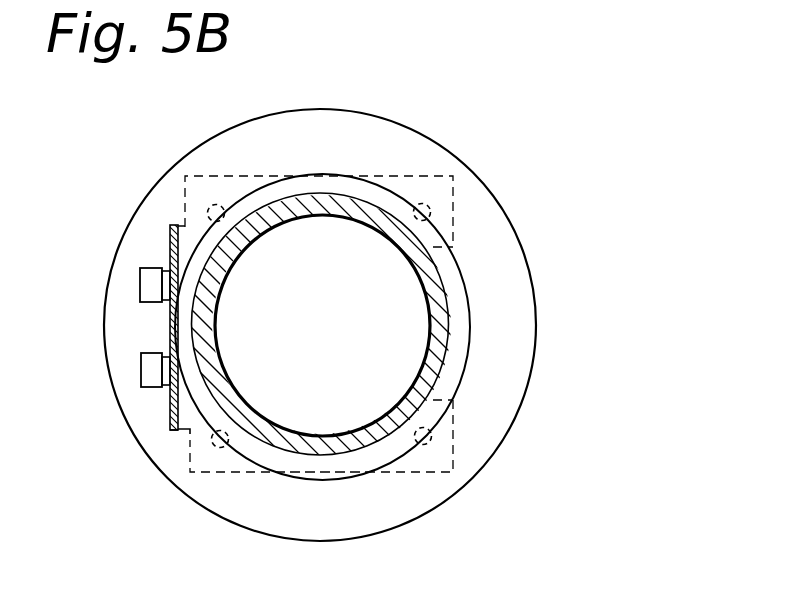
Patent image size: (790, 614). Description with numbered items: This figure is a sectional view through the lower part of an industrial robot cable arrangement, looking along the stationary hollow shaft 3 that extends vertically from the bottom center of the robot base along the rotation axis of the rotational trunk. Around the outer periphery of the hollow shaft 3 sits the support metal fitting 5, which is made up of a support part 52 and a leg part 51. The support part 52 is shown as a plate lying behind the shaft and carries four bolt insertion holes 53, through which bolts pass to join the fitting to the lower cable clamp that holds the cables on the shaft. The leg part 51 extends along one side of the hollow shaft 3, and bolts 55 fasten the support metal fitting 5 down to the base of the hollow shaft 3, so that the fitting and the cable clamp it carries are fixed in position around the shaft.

The hollow shaft 3 is at (212, 268).
The support metal fitting 5 is at (169, 242).
The leg part 51 is at (176, 424).
The support part 52 is at (437, 171).
The bolt insertion holes 53 is at (432, 214).
The bolts 55 is at (150, 292).